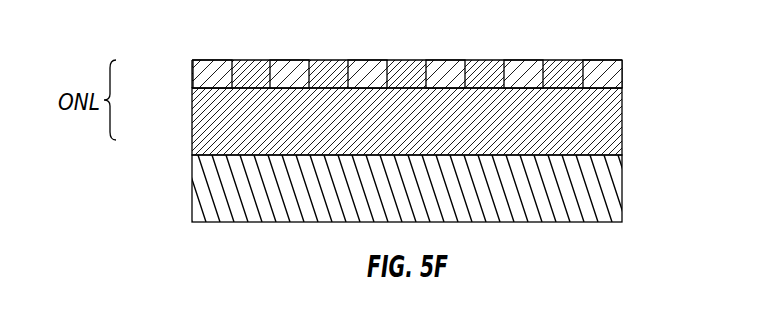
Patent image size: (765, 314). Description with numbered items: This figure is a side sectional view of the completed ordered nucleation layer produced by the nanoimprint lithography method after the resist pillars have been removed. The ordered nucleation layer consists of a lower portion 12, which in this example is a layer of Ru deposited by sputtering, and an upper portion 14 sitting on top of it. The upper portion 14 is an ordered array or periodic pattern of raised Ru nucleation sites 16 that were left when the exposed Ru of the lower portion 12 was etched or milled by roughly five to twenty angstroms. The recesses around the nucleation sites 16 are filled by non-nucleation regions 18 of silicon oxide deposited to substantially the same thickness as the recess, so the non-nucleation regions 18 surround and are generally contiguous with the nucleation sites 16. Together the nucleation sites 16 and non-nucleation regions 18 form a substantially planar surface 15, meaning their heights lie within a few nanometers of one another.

The lower portion 12 is at (203, 117).
The upper portion 14 is at (190, 62).
The substantially planar surface 15 is at (563, 60).
The nucleation sites 16 is at (257, 73).
The non-nucleation regions 18 is at (448, 72).